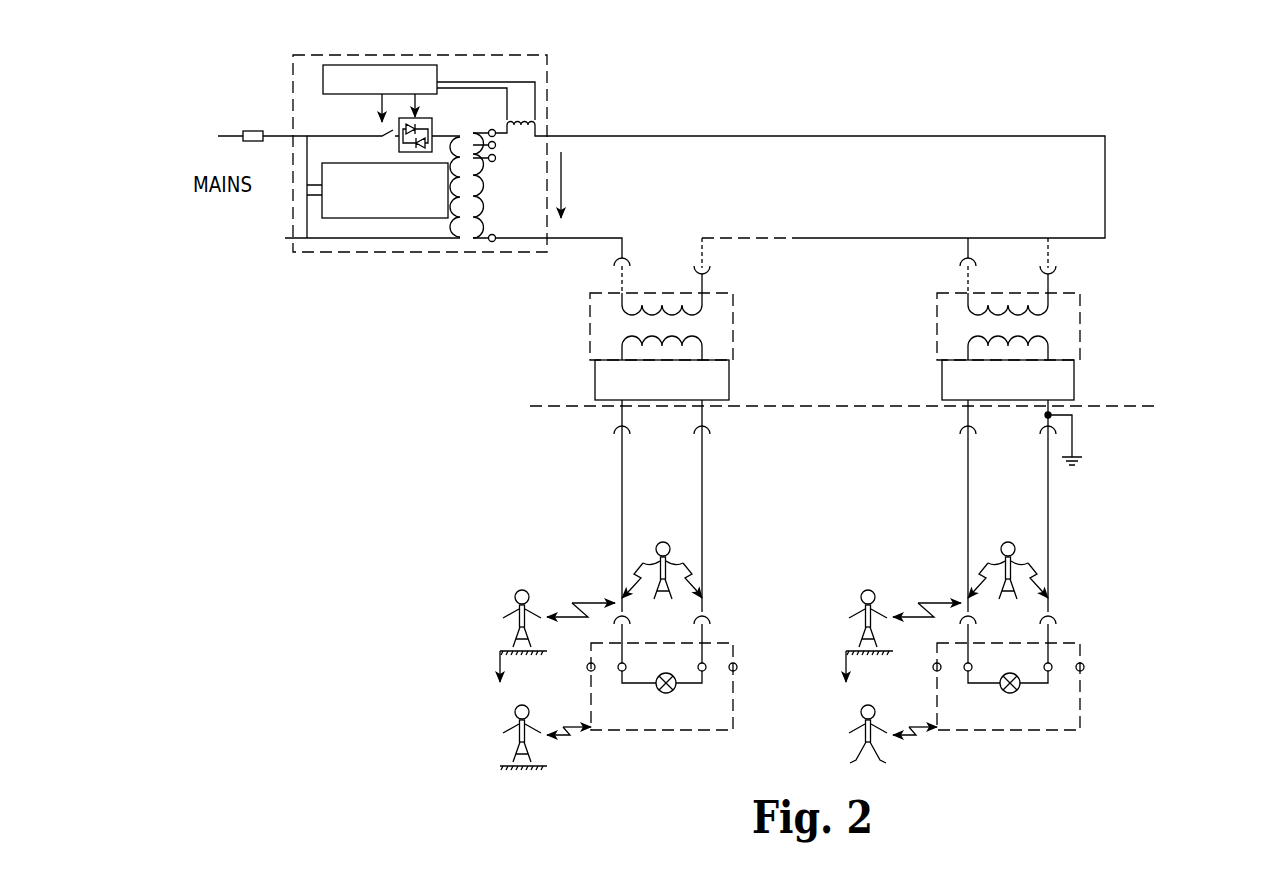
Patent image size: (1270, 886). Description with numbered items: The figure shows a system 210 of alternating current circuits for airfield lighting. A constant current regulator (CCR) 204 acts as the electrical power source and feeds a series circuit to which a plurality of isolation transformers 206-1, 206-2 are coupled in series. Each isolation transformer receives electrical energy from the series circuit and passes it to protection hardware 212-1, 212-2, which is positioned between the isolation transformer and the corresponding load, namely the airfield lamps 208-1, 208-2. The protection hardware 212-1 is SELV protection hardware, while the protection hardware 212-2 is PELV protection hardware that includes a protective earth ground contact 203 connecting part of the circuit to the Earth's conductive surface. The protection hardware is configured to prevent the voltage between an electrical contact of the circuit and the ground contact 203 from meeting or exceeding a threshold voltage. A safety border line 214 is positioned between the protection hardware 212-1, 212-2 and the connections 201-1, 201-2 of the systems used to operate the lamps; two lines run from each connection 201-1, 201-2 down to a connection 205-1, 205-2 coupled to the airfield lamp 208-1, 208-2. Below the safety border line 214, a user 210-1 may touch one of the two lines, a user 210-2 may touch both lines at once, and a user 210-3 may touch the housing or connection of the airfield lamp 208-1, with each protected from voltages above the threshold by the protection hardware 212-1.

The constant current regulator (CCR) 204 is at (420, 55).
The system 210 is at (1122, 58).
The isolation transformer 206-1 is at (733, 318).
The isolation transformer 206-2 is at (1080, 318).
The protection hardware 212-1 is at (729, 385).
The protection hardware 212-2 is at (1074, 385).
The connection 201-1 is at (716, 440).
The connection 201-2 is at (957, 434).
The safety border line 214 is at (1155, 406).
The ground contact 203 is at (1072, 440).
The user 210-1 is at (521, 572).
The user 210-2 is at (676, 554).
The user 210-3 is at (538, 752).
The connection 205-1 is at (723, 617).
The connection 205-2 is at (1068, 617).
The airfield lamp 208-1 is at (733, 705).
The airfield lamp 208-2 is at (1080, 705).